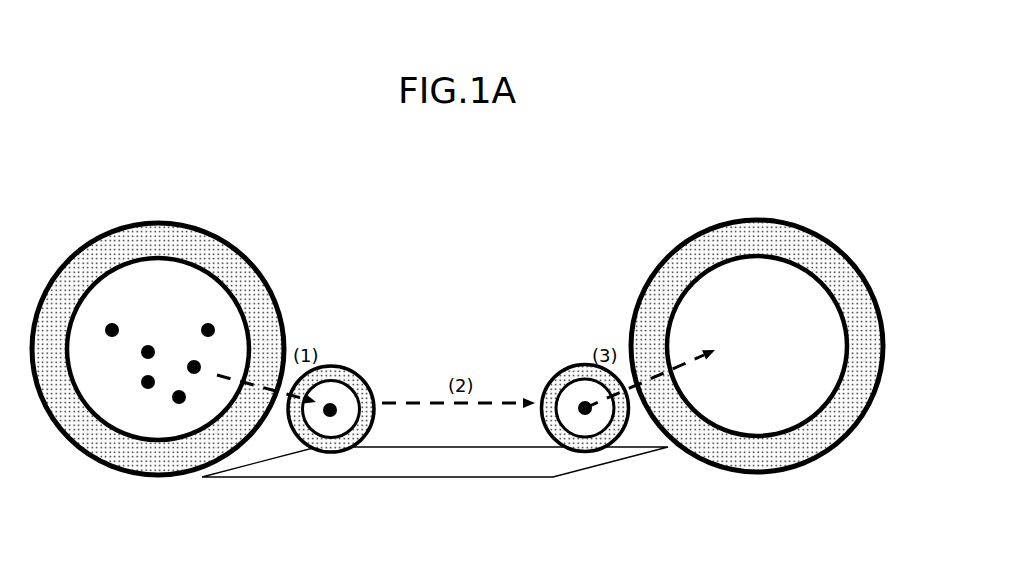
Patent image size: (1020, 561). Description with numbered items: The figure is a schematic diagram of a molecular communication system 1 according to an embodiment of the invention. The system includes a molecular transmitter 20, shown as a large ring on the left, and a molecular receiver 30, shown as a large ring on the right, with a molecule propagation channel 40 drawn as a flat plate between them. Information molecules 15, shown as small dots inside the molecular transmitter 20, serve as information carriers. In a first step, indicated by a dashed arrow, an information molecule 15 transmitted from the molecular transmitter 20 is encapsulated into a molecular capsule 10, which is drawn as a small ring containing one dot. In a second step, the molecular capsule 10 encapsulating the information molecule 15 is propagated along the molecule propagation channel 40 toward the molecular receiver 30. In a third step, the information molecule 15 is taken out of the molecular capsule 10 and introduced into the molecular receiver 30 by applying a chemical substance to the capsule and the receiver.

The molecular communication system 1 is at (462, 288).
The molecular capsule 10 is at (370, 381).
The information molecule 15 is at (112, 321).
The molecular transmitter 20 is at (268, 283).
The molecular receiver 30 is at (812, 231).
The molecule propagation channel 40 is at (450, 453).